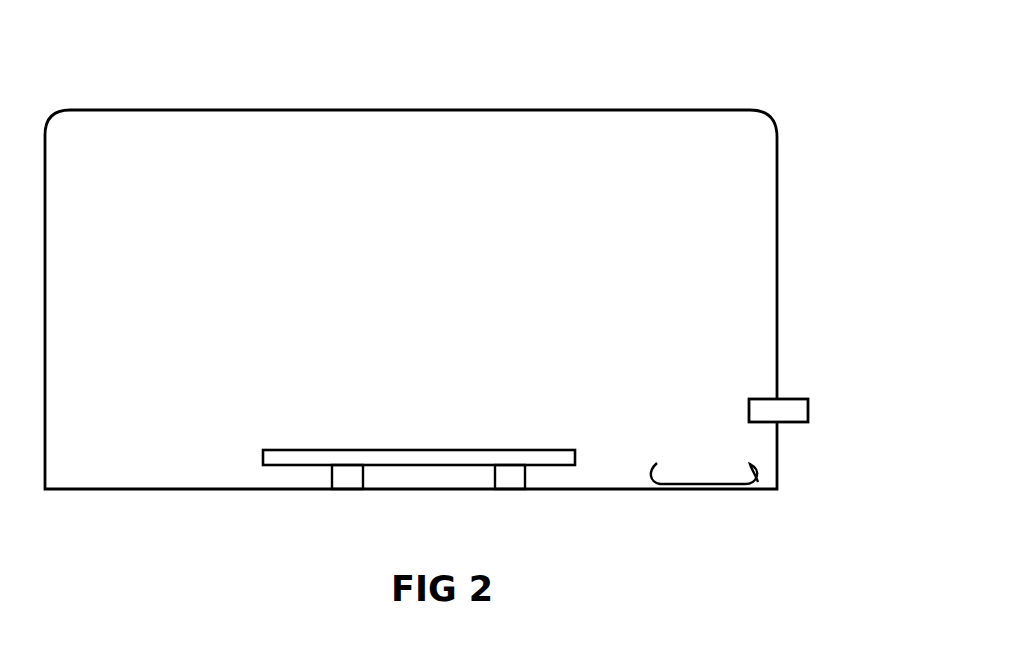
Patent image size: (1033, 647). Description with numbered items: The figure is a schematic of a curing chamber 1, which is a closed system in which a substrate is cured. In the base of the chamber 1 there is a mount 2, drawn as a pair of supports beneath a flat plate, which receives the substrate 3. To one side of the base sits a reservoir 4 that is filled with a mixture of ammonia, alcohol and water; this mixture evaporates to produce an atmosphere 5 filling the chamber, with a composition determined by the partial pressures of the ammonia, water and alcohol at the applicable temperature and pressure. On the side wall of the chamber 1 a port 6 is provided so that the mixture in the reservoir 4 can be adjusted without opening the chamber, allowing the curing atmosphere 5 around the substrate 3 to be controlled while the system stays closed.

The curing chamber 1 is at (708, 110).
The mount 2 is at (525, 480).
The substrate 3 is at (263, 462).
The reservoir 4 is at (752, 463).
The atmosphere 5 is at (170, 203).
The port 6 is at (798, 400).